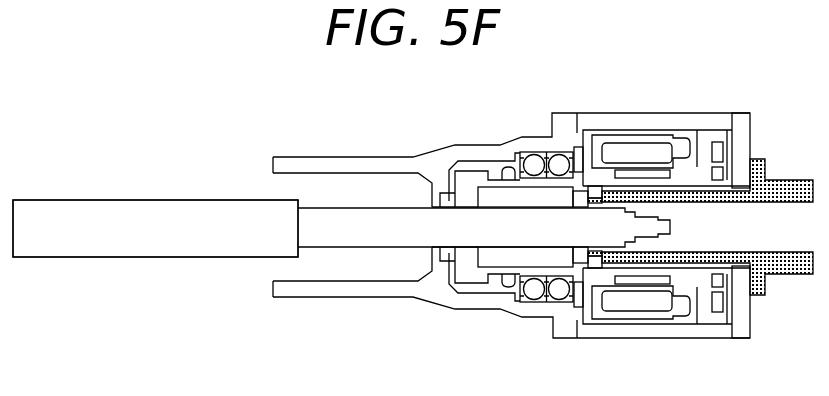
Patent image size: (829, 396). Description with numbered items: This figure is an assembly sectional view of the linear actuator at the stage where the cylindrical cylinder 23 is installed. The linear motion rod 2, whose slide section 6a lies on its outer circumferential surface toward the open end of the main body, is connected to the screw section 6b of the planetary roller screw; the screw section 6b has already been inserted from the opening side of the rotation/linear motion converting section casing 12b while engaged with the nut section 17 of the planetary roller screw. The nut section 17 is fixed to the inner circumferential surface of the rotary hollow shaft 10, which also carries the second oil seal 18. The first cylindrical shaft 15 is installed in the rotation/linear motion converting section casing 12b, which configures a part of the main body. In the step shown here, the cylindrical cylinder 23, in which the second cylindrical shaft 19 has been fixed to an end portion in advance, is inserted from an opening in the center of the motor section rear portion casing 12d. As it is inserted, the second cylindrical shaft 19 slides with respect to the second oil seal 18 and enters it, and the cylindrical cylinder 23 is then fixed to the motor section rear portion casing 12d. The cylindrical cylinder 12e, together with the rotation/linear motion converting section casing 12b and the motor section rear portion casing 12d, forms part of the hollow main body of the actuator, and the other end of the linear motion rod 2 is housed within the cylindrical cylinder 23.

The linear motion rod 2 is at (160, 194).
The slide section 6a is at (230, 246).
The screw section of the planetary roller screw 6b is at (427, 217).
The rotation/linear motion converting section casing 12b is at (333, 290).
The first cylindrical shaft 15 is at (445, 253).
The nut section of the planetary roller screw 17 is at (507, 253).
The second oil seal 18 is at (597, 263).
The second cylindrical shaft 19 is at (613, 260).
The rotary hollow shaft 10 is at (582, 150).
The motor section rear portion casing 12d is at (740, 118).
The cylindrical cylinder 12e is at (790, 177).
The cylindrical cylinder 23 is at (715, 257).